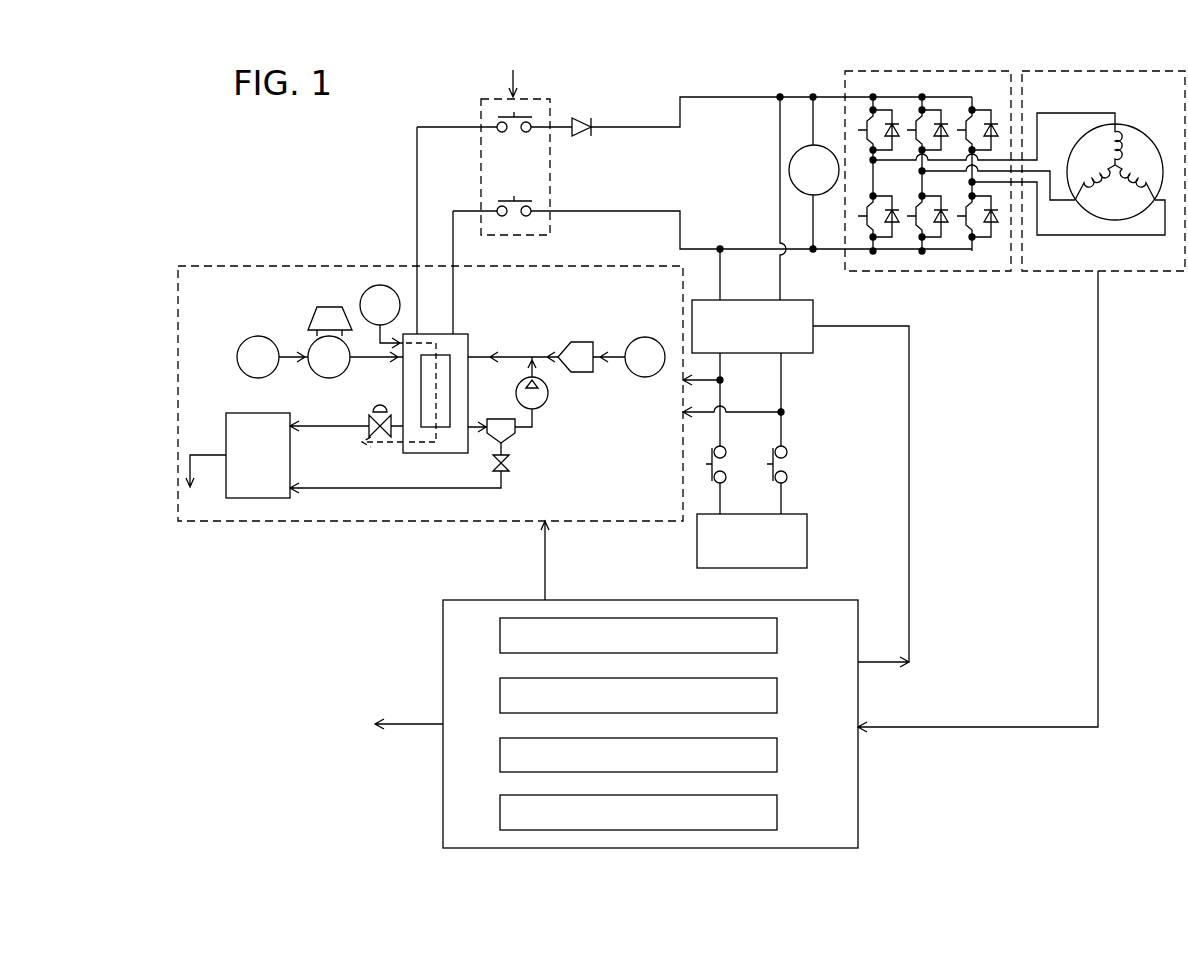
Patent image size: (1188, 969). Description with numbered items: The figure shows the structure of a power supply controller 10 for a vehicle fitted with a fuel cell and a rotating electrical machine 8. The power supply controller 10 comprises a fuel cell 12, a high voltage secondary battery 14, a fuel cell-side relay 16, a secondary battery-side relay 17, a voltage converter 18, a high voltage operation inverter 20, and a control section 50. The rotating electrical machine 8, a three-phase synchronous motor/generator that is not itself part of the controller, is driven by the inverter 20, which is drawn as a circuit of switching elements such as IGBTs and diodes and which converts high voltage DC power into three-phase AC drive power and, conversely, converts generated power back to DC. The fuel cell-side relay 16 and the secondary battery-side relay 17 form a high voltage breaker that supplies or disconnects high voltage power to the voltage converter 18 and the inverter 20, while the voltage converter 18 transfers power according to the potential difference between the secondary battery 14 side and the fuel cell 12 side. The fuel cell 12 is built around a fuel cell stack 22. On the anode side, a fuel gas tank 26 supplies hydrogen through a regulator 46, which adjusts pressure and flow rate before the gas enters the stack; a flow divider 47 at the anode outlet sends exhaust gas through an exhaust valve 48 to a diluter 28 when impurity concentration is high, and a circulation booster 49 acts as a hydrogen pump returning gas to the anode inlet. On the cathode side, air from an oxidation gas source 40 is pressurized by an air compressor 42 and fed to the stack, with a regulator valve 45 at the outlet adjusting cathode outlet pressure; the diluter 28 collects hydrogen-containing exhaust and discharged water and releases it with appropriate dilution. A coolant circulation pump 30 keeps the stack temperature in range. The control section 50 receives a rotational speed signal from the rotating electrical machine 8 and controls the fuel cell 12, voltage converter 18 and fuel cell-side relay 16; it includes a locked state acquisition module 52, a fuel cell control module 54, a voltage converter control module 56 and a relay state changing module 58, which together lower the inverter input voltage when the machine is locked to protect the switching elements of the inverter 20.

The rotating electrical machine 8 is at (1145, 271).
The power supply controller 10 is at (1035, 783).
The fuel cell 12 is at (290, 521).
The secondary battery 14 is at (807, 543).
The fuel cell-side relay 16 is at (478, 102).
The secondary battery-side relay 17 is at (805, 464).
The voltage converter 18 is at (808, 350).
The inverter 20 is at (955, 271).
The fuel cell stack 22 is at (460, 334).
The fuel gas tank 26 is at (650, 338).
The diluter 28 is at (226, 418).
The coolant circulation pump 30 is at (362, 292).
The oxidation gas source 40 is at (252, 337).
The air compressor 42 is at (320, 373).
The regulator valve 45 is at (355, 433).
The regulator 46 is at (585, 340).
The flow divider 47 is at (505, 440).
The exhaust valve 48 is at (515, 463).
The circulation booster 49 is at (548, 396).
The control section 50 is at (858, 800).
The locked state acquisition module 52 is at (500, 633).
The fuel cell control module 54 is at (500, 692).
The voltage converter control module 56 is at (500, 752).
The relay state changing module 58 is at (500, 810).